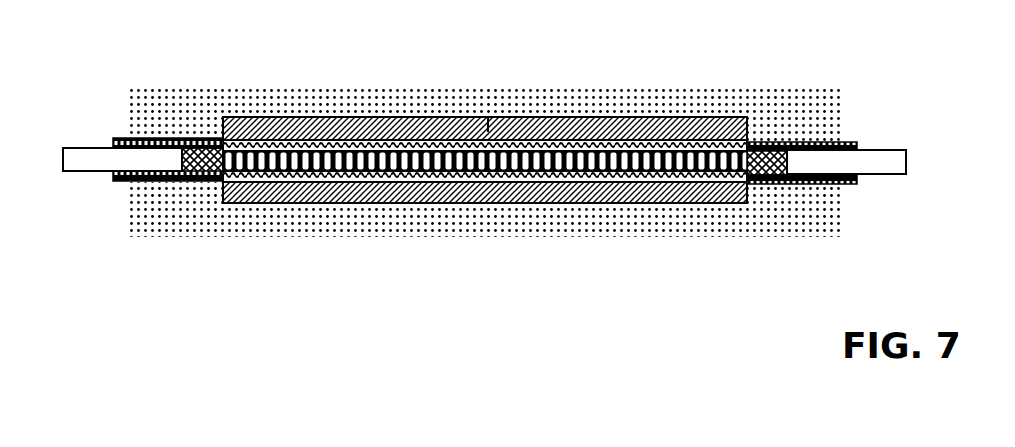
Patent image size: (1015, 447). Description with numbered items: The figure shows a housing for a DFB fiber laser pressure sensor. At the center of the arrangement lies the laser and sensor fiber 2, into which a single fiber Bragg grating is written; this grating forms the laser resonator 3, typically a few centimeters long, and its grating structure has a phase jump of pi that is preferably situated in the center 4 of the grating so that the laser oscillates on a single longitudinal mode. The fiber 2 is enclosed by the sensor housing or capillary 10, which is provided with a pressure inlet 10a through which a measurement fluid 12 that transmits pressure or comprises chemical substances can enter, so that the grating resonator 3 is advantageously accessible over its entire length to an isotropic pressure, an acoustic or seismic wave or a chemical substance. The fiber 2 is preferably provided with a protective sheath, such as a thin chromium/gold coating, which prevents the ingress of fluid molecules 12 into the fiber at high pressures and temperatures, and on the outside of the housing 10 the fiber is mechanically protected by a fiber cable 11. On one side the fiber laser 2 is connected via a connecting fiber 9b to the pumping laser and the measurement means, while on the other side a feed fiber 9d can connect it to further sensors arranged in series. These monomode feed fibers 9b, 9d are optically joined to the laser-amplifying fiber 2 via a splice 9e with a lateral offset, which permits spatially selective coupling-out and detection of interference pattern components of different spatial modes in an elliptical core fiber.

The fiber 2 is at (275, 115).
The fiber Bragg grating resonator 3 is at (527, 170).
The center of the grating 4 is at (466, 185).
The connecting fiber 9b is at (93, 160).
The feed fiber 9d is at (845, 160).
The splice 9e is at (190, 175).
The sensor housing or capillary 10 is at (605, 116).
The pressure inlet 10a is at (490, 135).
The fiber cable 11 is at (153, 180).
The measurement fluid 12 is at (370, 112).